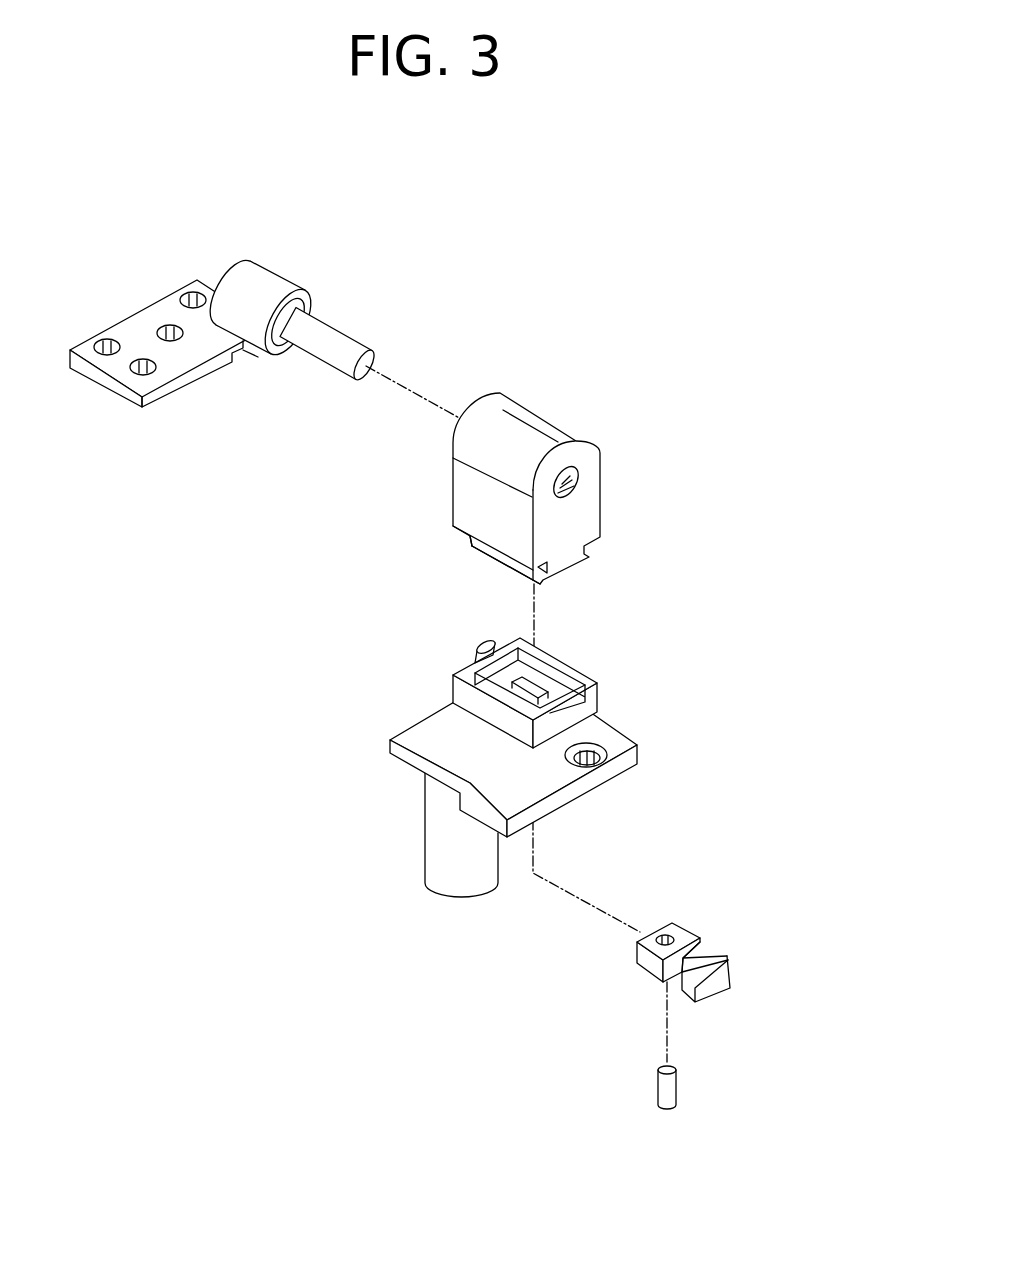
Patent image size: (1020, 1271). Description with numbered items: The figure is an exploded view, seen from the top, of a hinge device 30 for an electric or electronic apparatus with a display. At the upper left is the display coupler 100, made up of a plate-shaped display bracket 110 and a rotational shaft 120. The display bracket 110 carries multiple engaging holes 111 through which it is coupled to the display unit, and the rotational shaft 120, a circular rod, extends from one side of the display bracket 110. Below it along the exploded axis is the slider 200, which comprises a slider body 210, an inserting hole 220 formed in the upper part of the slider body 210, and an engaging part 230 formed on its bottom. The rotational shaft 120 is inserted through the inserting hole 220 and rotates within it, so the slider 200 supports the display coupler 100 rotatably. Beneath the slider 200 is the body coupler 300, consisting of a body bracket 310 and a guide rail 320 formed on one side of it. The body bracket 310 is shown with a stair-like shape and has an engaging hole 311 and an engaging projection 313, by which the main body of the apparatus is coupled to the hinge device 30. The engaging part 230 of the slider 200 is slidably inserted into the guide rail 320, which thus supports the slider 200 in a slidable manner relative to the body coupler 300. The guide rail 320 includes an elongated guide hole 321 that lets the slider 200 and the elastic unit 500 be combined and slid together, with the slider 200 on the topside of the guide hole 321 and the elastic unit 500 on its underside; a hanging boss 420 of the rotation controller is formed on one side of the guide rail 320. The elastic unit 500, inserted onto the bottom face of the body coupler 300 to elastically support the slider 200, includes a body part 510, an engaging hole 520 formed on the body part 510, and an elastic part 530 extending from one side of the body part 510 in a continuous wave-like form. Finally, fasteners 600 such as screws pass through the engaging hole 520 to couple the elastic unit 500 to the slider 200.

The hinge device 30 is at (83, 233).
The display coupler 100 is at (224, 373).
The display bracket 110 is at (195, 351).
The engaging holes 111 is at (140, 369).
The rotational shaft 120 is at (315, 379).
The slider 200 is at (597, 491).
The slider body 210 is at (572, 522).
The inserting hole 220 is at (572, 478).
The engaging part 230 is at (588, 562).
The body coupler 300 is at (582, 750).
The body bracket 310 is at (547, 780).
The engaging hole 311 is at (610, 748).
The engaging projection 313 is at (473, 847).
The guide rail 320 is at (582, 693).
The guide hole 321 is at (567, 688).
The hanging boss 420 is at (475, 662).
The elastic unit 500 is at (763, 939).
The body part 510 is at (673, 933).
The engaging hole 520 is at (693, 935).
The elastic part 530 is at (749, 980).
The fasteners 600 is at (668, 1087).